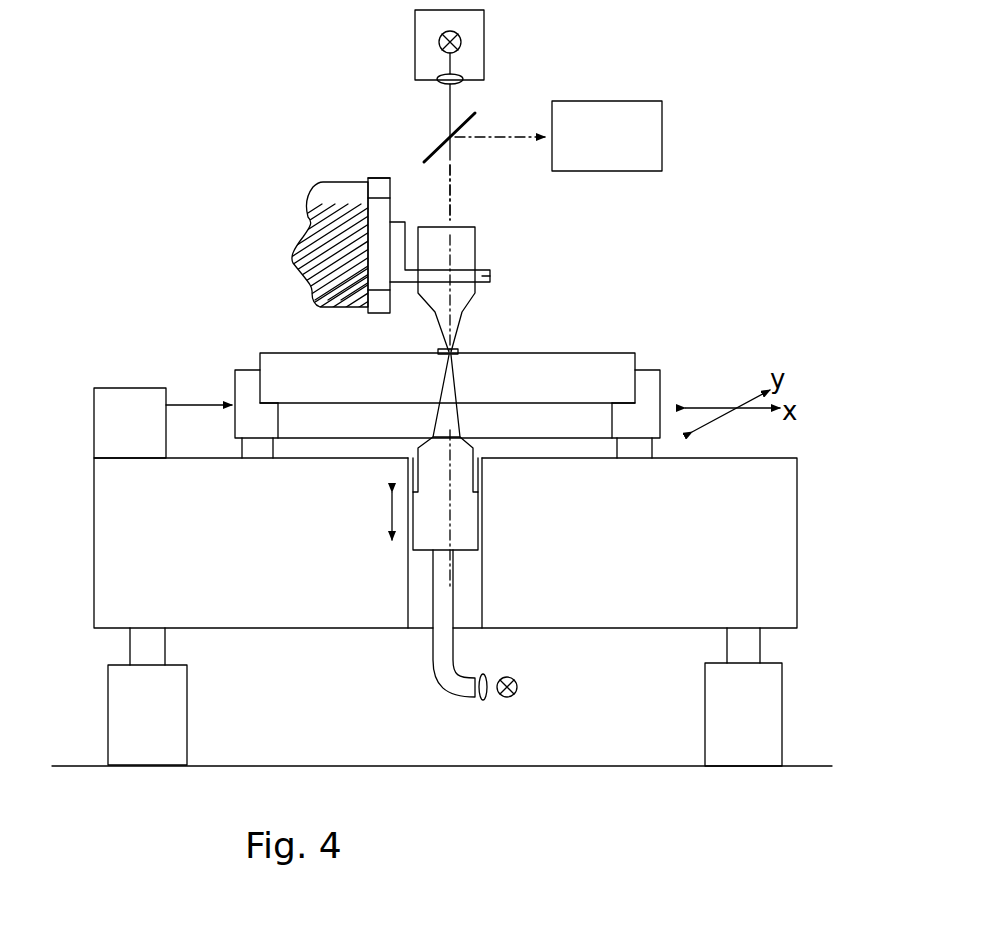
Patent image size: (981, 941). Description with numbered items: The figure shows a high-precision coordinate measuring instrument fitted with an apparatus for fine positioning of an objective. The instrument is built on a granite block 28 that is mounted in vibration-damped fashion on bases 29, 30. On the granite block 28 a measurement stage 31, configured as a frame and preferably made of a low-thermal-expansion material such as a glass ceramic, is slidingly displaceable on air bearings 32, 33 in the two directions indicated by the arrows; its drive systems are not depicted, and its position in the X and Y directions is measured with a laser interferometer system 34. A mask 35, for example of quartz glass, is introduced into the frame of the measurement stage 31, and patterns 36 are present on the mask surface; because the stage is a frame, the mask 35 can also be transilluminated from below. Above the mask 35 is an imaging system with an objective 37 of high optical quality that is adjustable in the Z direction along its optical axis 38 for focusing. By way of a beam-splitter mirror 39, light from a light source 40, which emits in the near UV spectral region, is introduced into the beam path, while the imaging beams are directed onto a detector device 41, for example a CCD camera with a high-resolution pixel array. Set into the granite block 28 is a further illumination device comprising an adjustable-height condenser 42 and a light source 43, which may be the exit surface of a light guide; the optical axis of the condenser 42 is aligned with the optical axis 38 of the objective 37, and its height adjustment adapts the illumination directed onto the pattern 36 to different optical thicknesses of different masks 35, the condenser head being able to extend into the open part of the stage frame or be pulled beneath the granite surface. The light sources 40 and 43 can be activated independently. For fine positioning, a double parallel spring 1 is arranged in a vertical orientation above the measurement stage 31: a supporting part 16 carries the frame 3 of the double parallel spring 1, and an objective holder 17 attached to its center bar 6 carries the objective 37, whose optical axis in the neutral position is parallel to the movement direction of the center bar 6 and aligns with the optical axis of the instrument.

The double parallel spring 1 is at (367, 179).
The frame 3 is at (378, 185).
The center bar 6 is at (380, 215).
The supporting part 16 is at (317, 247).
The objective holder 17 is at (492, 283).
The granite block 28 is at (788, 553).
The base 29 is at (748, 645).
The base 30 is at (142, 642).
The measurement stage 31 is at (650, 380).
The air bearing 32 is at (253, 452).
The air bearing 33 is at (632, 455).
The laser interferometer system 34 is at (103, 405).
The mask 35 is at (596, 368).
The pattern 36 is at (436, 352).
The objective 37 is at (467, 258).
The optical axis 38 is at (455, 193).
The beam-splitter mirror 39 is at (428, 155).
The light source 40 is at (482, 52).
The detector device 41 is at (652, 141).
The condenser 42 is at (475, 527).
The light source 43 is at (478, 708).